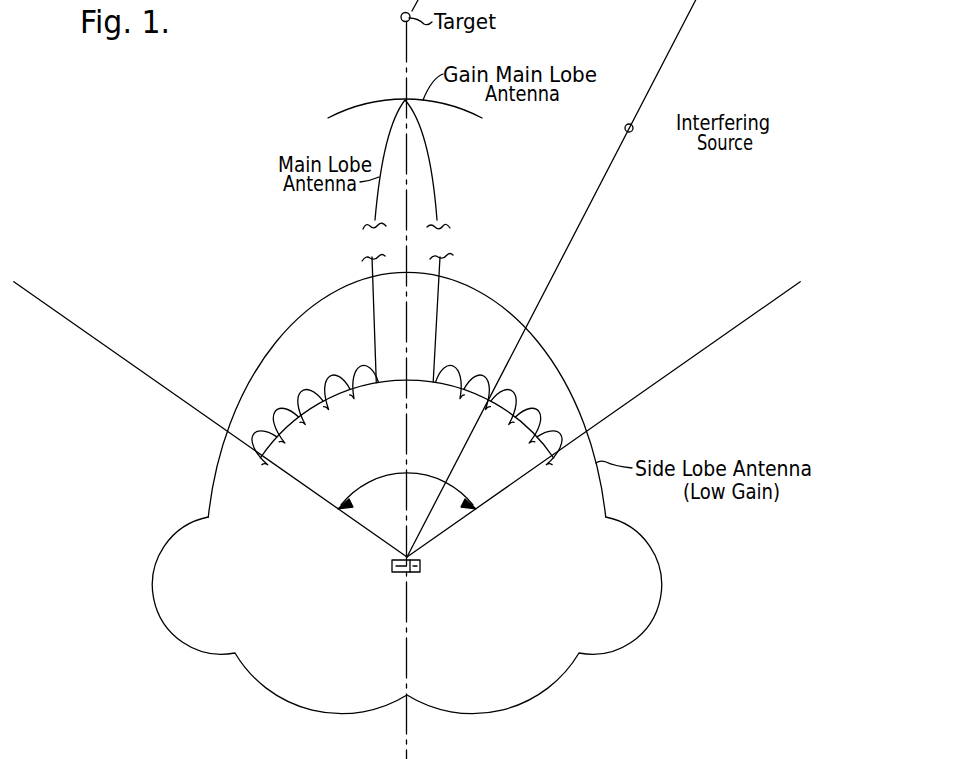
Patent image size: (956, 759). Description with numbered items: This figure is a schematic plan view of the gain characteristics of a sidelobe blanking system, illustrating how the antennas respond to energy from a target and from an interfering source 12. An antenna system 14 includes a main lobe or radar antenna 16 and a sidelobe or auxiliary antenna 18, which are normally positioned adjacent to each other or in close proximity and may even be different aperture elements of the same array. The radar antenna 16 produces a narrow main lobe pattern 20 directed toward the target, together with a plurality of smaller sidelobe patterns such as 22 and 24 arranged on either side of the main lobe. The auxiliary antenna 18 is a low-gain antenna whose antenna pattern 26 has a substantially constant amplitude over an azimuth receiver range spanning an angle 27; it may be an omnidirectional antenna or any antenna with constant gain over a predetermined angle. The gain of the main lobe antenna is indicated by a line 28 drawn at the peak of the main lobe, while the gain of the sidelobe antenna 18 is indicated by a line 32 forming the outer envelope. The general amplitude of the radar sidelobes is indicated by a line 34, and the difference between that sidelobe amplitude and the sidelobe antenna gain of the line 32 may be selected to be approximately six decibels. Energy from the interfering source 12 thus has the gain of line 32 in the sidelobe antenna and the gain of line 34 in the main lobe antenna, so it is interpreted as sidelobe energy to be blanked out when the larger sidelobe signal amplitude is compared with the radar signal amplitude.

The interfering source 12 is at (673, 122).
The antenna system 14 is at (380, 584).
The main lobe antenna 16 is at (392, 565).
The sidelobe antenna 18 is at (421, 568).
The main lobe pattern 20 is at (429, 166).
The sidelobe pattern 22 is at (284, 412).
The sidelobe pattern 24 is at (538, 419).
The antenna pattern 26 is at (549, 360).
The angle 27 is at (461, 479).
The line 28 is at (345, 102).
The line 32 is at (461, 286).
The line 34 is at (457, 377).